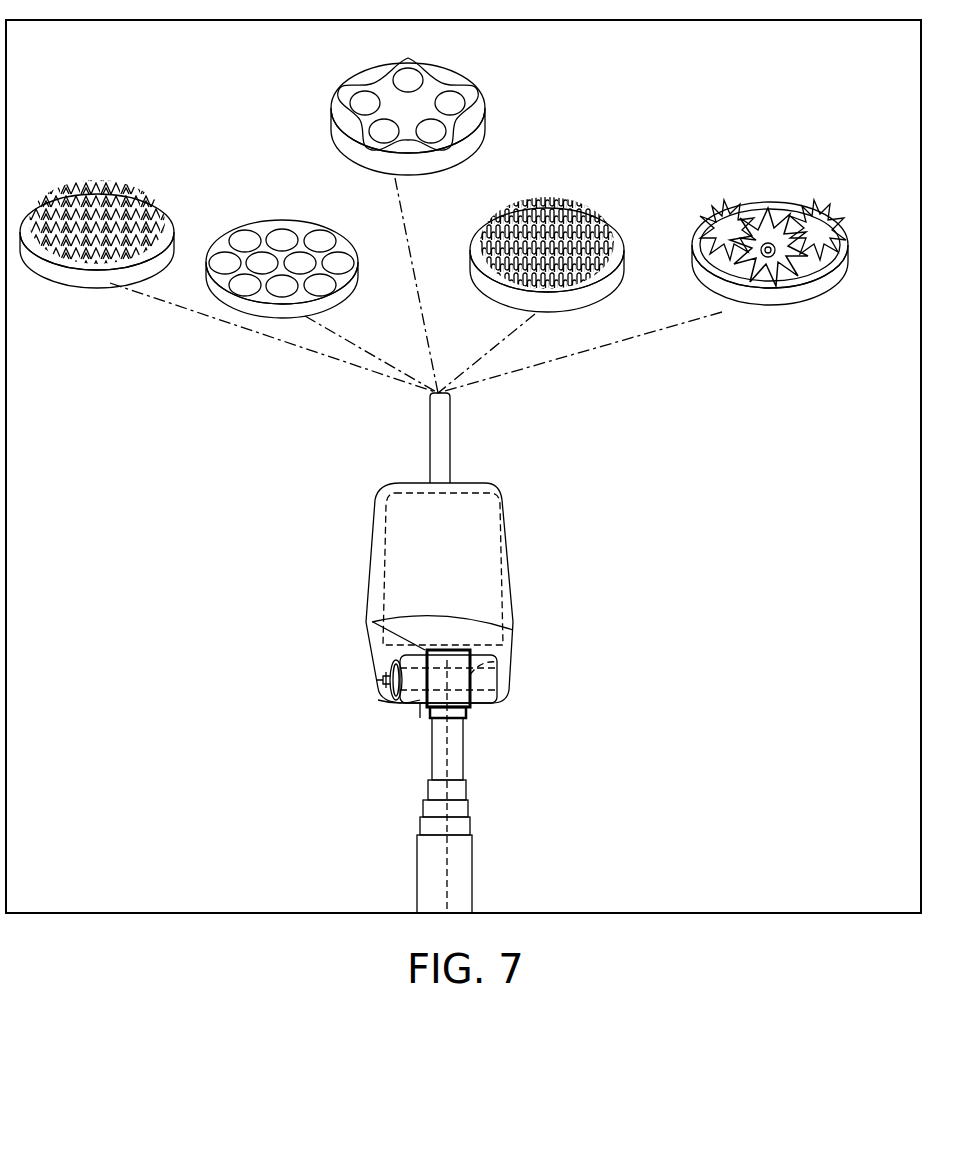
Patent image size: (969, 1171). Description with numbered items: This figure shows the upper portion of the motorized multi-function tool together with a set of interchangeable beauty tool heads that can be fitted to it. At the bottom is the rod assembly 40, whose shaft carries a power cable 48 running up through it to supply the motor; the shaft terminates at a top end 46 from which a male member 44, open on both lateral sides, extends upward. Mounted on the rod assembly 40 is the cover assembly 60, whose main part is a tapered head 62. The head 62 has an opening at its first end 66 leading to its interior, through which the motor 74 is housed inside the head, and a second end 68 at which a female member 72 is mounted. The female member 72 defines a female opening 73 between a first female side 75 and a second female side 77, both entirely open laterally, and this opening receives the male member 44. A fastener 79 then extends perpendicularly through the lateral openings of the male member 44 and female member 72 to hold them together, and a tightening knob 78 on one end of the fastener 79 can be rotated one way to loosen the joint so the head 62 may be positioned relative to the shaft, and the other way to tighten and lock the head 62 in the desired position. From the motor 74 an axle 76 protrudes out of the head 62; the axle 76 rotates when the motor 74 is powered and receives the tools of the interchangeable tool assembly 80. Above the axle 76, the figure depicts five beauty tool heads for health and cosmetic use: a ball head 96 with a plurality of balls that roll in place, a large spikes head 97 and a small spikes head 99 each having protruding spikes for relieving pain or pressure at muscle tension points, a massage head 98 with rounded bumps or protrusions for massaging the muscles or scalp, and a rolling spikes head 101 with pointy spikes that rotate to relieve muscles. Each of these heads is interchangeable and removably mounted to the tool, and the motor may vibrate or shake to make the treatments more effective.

The rod assembly 40 is at (429, 786).
The male member 44 is at (470, 720).
The top end 46 is at (430, 730).
The power cable 48 is at (450, 855).
The cover assembly 60 is at (424, 575).
The head 62 is at (385, 518).
The first end 66 is at (477, 486).
The second end 68 is at (418, 700).
The female member 72 is at (500, 691).
The female opening 73 is at (400, 640).
The motor 74 is at (478, 569).
The first female side 75 is at (422, 712).
The axle 76 is at (440, 432).
The second female side 77 is at (475, 700).
The tightening knob 78 is at (388, 682).
The fastener 79 is at (500, 675).
The interchangeable tool assembly 80 is at (357, 153).
The ball head 96 is at (395, 163).
The large spikes head 97 is at (80, 280).
The massage head 98 is at (265, 226).
The small spikes head 99 is at (598, 262).
The rolling spikes head 101 is at (782, 302).